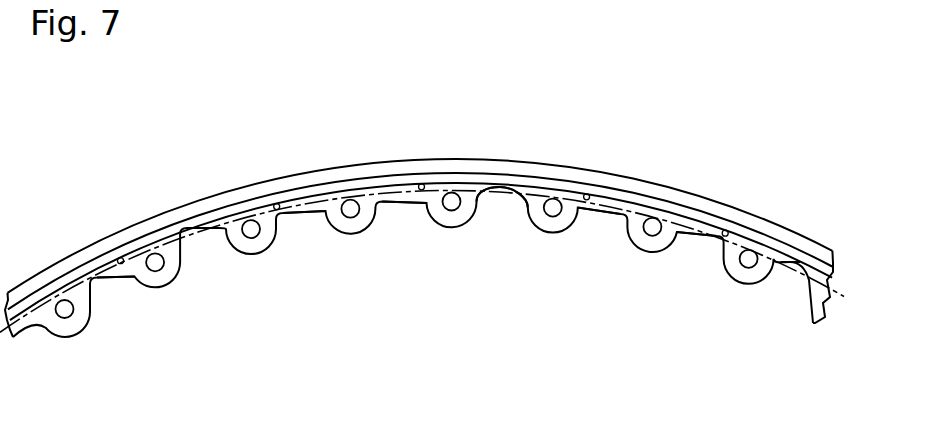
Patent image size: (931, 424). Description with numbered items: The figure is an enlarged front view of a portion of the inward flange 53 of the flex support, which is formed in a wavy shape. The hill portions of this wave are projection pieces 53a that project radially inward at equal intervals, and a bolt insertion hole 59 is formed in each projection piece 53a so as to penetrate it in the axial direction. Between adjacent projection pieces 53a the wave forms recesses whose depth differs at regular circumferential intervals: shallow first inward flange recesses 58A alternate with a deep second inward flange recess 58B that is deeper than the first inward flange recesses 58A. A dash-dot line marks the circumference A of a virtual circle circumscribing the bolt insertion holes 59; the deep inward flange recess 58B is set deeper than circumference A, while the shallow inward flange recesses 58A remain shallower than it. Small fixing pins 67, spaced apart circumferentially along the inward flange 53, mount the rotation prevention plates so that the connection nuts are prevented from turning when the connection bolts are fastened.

The inward flange 53 is at (521, 160).
The projection piece 53a is at (251, 254).
The first inward flange recess 58A is at (299, 213).
The second inward flange recess 58B is at (501, 188).
The bolt insertion hole 59 is at (70, 312).
The fixing pin 67 is at (121, 258).
The circumference of virtual circle A is at (87, 283).